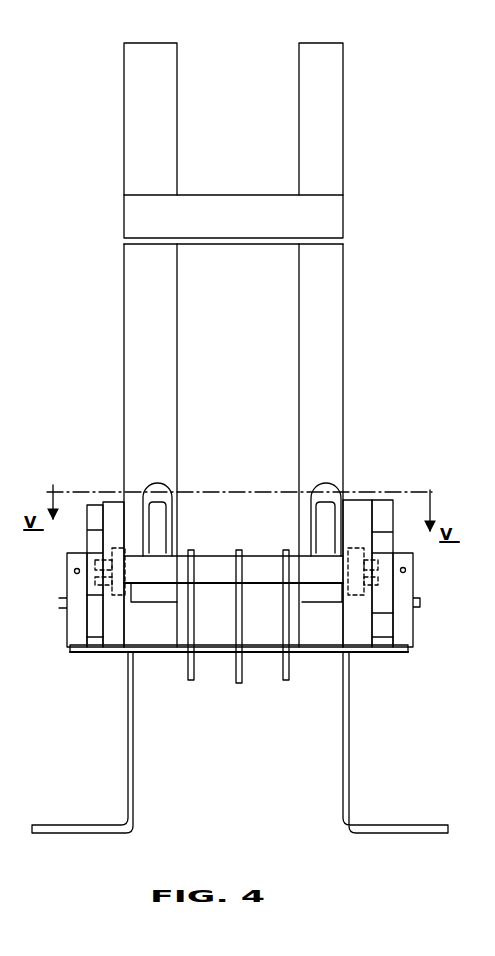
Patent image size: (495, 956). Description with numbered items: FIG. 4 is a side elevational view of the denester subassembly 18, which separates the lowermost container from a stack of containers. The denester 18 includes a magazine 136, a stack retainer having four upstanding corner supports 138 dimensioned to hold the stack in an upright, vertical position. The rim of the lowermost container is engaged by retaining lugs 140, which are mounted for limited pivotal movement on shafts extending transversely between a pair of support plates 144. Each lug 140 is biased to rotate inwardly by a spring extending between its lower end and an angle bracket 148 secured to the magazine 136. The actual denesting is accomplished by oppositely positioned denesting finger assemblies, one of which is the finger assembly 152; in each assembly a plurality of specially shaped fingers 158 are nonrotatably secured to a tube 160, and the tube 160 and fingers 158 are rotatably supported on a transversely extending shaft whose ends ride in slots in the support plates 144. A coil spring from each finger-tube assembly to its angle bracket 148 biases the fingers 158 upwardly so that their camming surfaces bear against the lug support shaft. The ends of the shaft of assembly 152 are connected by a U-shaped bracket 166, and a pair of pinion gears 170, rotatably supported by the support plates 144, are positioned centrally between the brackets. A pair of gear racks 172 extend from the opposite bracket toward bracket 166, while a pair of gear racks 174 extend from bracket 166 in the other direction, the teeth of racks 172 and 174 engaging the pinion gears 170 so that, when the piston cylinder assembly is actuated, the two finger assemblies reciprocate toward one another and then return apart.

The denester subassembly 18 is at (382, 272).
The magazine 136 is at (360, 152).
The corner supports 138 is at (163, 58).
The retaining lugs 140 is at (158, 512).
The support plates 144 is at (115, 509).
The angle bracket 148 is at (328, 212).
The denesting finger assembly 152 is at (337, 631).
The fingers 158 is at (193, 680).
The tube 160 is at (265, 556).
The U-shaped bracket 166 is at (113, 652).
The pinion gears 170 is at (92, 580).
The gear racks 172 is at (95, 539).
The gear racks 174 is at (98, 605).